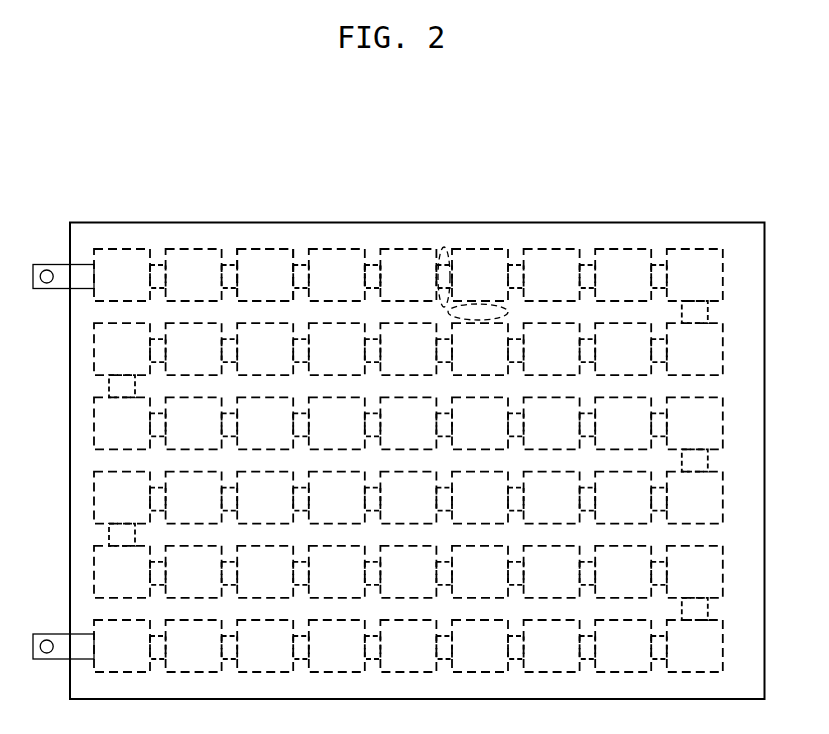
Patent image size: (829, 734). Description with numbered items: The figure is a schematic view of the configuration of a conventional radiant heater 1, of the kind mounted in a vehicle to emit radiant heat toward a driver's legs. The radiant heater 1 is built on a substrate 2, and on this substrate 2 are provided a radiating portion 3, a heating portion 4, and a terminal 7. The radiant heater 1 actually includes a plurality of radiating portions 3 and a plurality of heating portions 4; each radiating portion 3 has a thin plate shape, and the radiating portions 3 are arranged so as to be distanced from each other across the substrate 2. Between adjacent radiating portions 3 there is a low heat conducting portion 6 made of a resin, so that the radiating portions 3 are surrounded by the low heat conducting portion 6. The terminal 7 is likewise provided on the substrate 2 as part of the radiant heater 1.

The radiant heater 1 is at (397, 397).
The substrate 2 is at (620, 222).
The radiating portion 3 is at (266, 249).
The heating portion 4 is at (373, 265).
The low heat conducting portion 6 is at (490, 305).
The terminal 7 is at (42, 263).